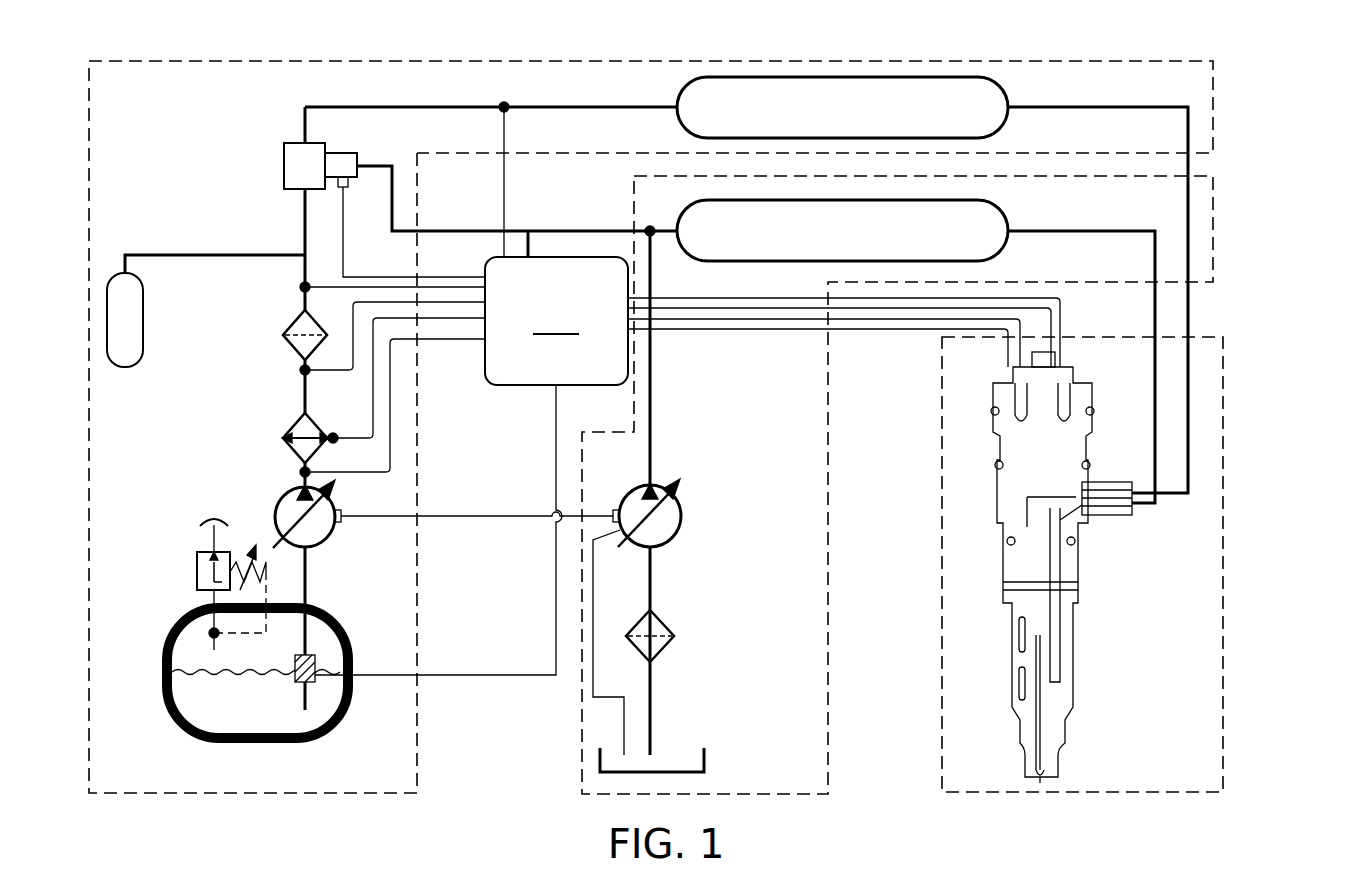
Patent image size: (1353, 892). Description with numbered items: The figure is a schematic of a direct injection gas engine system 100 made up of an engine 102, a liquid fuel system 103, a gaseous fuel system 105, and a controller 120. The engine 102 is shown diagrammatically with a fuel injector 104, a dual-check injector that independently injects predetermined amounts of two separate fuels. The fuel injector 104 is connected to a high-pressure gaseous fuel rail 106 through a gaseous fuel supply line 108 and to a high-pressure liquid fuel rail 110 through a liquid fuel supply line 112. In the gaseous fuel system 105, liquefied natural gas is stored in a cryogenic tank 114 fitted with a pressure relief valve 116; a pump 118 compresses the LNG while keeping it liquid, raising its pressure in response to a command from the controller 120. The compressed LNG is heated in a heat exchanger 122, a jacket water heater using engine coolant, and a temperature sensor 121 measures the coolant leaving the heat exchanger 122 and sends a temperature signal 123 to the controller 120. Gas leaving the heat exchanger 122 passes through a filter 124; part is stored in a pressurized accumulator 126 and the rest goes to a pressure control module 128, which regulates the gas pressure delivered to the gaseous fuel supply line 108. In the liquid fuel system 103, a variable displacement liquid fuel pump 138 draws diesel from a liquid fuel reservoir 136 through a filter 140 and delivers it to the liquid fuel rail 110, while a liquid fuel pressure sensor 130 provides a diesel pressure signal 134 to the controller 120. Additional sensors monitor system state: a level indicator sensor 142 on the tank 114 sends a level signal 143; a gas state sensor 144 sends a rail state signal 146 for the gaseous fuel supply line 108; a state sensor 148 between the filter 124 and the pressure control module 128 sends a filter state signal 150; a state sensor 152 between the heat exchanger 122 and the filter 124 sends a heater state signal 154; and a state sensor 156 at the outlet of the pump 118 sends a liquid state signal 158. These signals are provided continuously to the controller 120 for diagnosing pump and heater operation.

The DIG engine system 100 is at (1230, 98).
The engine 102 is at (1097, 792).
The liquid fuel system 103 is at (749, 794).
The fuel injector 104 is at (1096, 613).
The gaseous fuel system 105 is at (288, 793).
The high-pressure gaseous fuel rail 106 is at (756, 76).
The gaseous fuel supply line 108 is at (1188, 132).
The high-pressure liquid fuel rail 110 is at (1010, 212).
The liquid fuel supply line 112 is at (1090, 230).
The cryogenic tank 114 is at (258, 745).
The pressure relief valve 116 is at (190, 554).
The pump 118 is at (331, 542).
The controller 120 is at (772, 321).
The temperature sensor 121 is at (336, 442).
The heat exchanger 122 is at (286, 436).
The temperature signal 123 is at (373, 404).
The filter 124 is at (288, 334).
The pressurized accumulator 126 is at (125, 368).
The pressure control module 128 is at (284, 165).
The liquid fuel pressure sensor 130 is at (652, 228).
The diesel pressure signal 134 is at (517, 211).
The liquid fuel reservoir 136 is at (672, 748).
The liquid fuel pump 138 is at (680, 534).
The filter 140 is at (672, 628).
The level indicator sensor 142 is at (318, 656).
The level signal 143 is at (393, 678).
The gas state sensor 144 is at (508, 105).
The rail state signal 146 is at (506, 132).
The state sensor 148 is at (302, 287).
The filter state signal 150 is at (333, 287).
The state sensor 152 is at (302, 370).
The heater state signal 154 is at (353, 336).
The state sensor 156 is at (302, 472).
The liquid state signal 158 is at (390, 474).